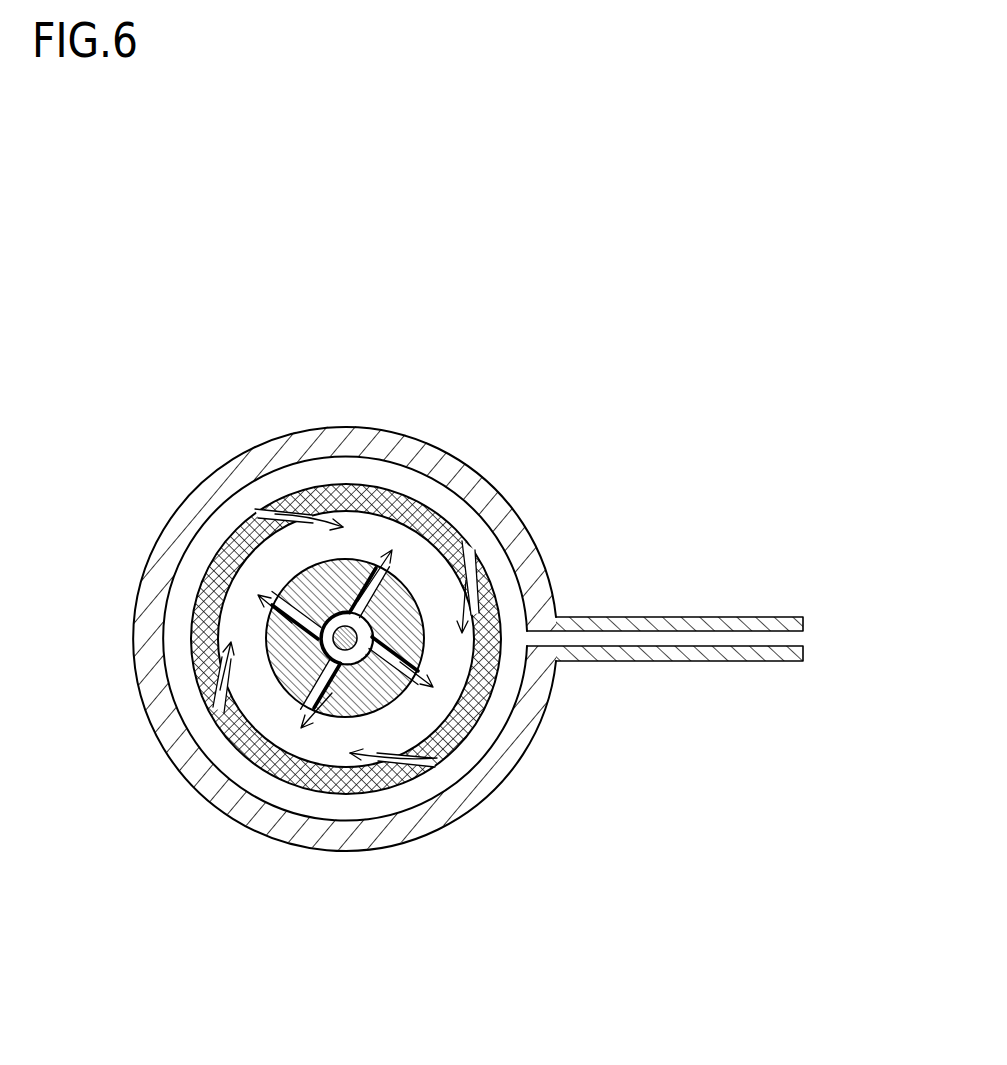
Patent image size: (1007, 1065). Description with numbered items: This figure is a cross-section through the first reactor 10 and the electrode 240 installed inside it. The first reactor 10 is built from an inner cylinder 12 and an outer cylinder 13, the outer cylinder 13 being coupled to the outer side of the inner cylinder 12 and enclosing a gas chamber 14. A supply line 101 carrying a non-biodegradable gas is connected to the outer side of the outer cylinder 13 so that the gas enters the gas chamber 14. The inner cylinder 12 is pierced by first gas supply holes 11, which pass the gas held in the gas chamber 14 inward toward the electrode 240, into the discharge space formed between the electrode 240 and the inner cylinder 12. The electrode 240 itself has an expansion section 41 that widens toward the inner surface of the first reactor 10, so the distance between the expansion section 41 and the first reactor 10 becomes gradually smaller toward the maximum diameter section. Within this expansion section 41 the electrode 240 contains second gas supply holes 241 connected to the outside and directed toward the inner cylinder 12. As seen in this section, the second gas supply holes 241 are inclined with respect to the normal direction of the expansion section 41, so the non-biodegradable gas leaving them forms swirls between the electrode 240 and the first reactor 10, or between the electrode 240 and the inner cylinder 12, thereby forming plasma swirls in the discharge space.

The first reactor 10 is at (468, 588).
The first gas supply holes 11 is at (262, 513).
The inner cylinder 12 is at (355, 494).
The outer cylinder 13 is at (407, 447).
The gas chamber 14 is at (177, 622).
The expansion section 41 is at (415, 653).
The supply line 101 is at (758, 623).
The electrode 240 is at (291, 677).
The second gas supply holes 241 is at (331, 691).